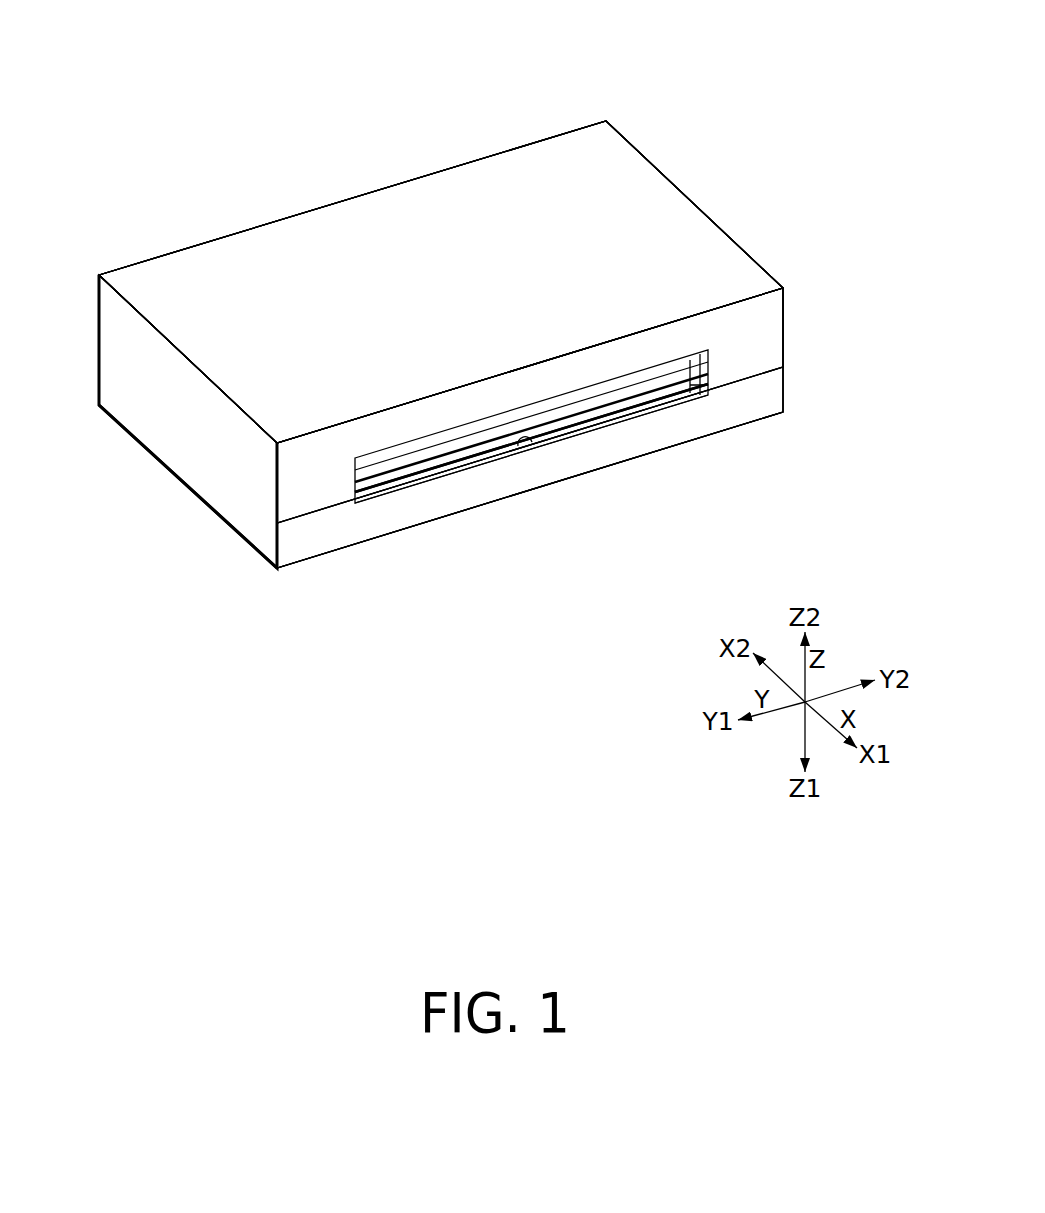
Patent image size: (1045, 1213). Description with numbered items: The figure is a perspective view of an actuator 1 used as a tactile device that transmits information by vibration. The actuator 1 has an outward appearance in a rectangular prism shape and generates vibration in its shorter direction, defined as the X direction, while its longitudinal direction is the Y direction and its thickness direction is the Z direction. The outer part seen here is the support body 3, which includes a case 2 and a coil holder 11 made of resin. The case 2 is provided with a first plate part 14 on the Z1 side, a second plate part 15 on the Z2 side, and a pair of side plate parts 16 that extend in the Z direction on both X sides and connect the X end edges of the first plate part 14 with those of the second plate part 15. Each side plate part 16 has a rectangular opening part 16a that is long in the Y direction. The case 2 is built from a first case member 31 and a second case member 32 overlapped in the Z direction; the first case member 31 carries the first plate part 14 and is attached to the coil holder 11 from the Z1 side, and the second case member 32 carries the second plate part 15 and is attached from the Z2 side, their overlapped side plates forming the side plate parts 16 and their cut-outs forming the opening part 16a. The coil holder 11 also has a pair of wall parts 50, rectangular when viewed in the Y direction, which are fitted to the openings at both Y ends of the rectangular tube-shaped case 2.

The actuator 1 is at (193, 123).
The case 2 is at (879, 233).
The support body 3 is at (673, 140).
The coil holder 11 is at (170, 428).
The first plate part 14 is at (383, 537).
The second plate part 15 is at (443, 217).
The side plate part 16 is at (607, 455).
The opening part 16a is at (530, 447).
The first case member 31 is at (770, 405).
The second case member 32 is at (722, 260).
The wall part 50 is at (220, 478).